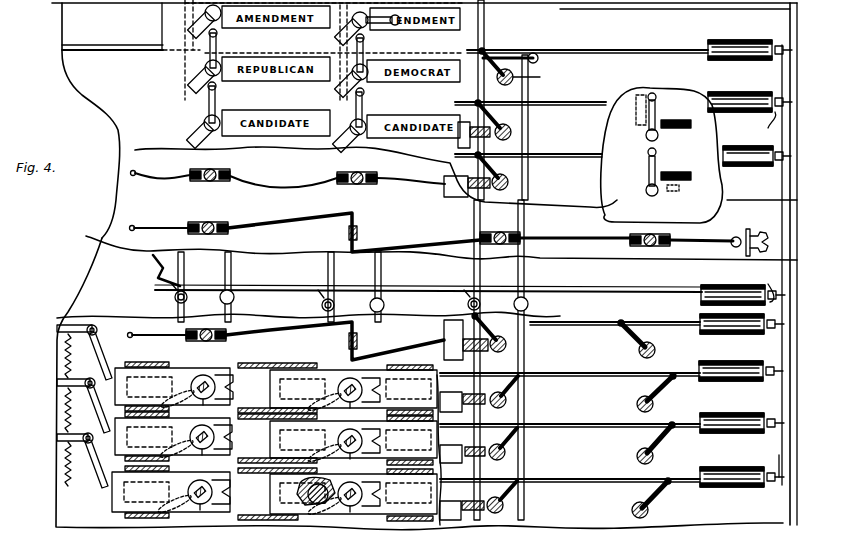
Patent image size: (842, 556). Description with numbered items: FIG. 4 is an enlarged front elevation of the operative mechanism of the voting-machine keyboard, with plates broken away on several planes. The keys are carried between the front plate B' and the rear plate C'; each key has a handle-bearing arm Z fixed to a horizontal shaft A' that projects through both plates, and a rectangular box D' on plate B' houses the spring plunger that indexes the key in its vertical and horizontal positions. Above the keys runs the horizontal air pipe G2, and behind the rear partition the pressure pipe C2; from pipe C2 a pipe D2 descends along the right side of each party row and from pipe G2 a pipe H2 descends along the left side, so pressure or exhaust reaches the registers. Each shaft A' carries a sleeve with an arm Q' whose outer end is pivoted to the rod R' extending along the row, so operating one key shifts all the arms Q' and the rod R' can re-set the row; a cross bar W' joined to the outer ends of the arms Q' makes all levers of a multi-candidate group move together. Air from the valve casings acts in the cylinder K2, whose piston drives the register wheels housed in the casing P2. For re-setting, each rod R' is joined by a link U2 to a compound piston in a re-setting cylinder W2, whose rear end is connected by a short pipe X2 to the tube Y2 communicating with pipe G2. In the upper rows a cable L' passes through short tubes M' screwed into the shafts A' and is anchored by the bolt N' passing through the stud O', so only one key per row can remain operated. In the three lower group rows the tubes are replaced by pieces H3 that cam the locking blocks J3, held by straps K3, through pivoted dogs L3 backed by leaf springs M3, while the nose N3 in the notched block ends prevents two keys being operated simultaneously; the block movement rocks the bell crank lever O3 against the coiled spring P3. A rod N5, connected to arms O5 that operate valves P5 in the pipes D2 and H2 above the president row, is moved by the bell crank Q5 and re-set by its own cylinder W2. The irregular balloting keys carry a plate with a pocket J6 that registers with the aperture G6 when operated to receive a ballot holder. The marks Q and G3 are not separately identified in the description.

The horizontal pipe G2 is at (90, 3).
The horizontal pipe C2 is at (120, 45).
The handle bearing arm Z is at (217, 35).
The front plate B' is at (426, 266).
The rectangular box D' is at (259, 82).
The pipe H2 is at (184, 268).
The rod R' is at (574, 303).
The pipe D2 is at (513, 80).
The arm Q' is at (567, 295).
The horizontal shaft A' is at (417, 289).
The cylinder K2 is at (472, 127).
The casing P2 is at (458, 140).
The crank Q is at (484, 406).
The re-setting cylinder W2 is at (722, 60).
The tube Y2 is at (782, 78).
The hook G3 is at (762, 207).
The short pipe X2 is at (764, 462).
The link U2 is at (668, 50).
The pocket J6 is at (630, 100).
The elongated rectangular aperture G6 is at (688, 150).
The rear plate C' is at (159, 254).
The short tube M' is at (428, 251).
The cable L' is at (479, 260).
The stud O' is at (749, 234).
The bolt N' is at (729, 226).
The bell crank Q5 is at (150, 262).
The rod N5 is at (430, 290).
The arm O5 is at (174, 296).
The valve P5 is at (176, 303).
The bell crank lever O3 is at (97, 331).
The coiled spring P3 is at (70, 358).
The locking block J3 is at (274, 441).
The metallic strap K3 is at (144, 362).
The projecting point N3 is at (275, 446).
The piece H3 is at (212, 376).
The pivoted dog L3 is at (178, 488).
The leaf spring M3 is at (318, 520).
The cross bar W' is at (556, 398).